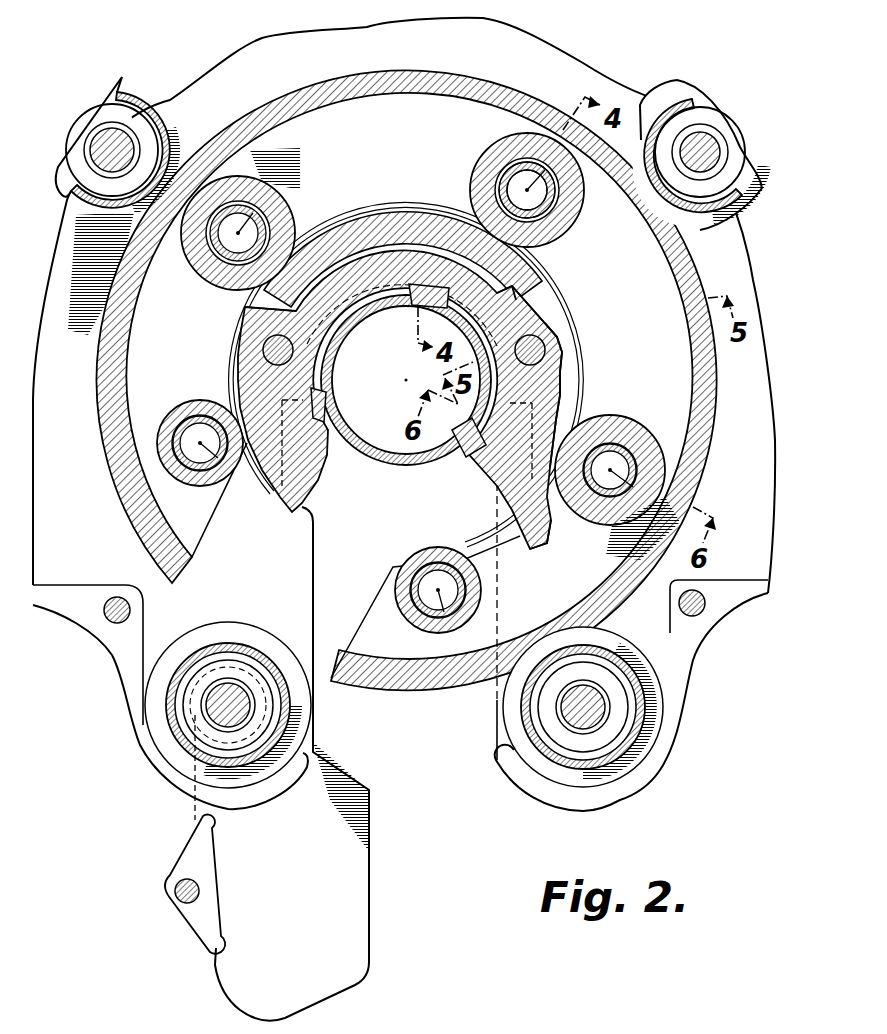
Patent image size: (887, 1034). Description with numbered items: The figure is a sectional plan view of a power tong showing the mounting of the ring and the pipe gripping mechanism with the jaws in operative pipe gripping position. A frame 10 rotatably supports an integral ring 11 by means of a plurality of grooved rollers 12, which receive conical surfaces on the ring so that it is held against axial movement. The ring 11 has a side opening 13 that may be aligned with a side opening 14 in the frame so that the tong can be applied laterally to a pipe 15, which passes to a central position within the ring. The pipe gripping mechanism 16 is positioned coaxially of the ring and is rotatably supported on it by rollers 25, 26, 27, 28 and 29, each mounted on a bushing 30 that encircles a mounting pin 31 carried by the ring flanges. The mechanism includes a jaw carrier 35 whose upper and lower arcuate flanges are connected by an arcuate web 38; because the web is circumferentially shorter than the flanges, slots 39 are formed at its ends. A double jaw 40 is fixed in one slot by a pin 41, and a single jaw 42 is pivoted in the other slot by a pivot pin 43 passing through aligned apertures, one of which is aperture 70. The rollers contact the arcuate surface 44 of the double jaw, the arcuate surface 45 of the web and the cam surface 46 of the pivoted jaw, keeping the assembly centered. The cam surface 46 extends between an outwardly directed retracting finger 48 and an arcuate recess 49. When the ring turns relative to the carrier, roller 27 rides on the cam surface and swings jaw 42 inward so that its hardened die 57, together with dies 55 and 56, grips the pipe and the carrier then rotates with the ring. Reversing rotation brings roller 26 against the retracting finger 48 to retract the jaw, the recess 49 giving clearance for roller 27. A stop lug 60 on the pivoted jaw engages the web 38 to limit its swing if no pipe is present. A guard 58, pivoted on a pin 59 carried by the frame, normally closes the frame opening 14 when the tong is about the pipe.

The frame 10 is at (590, 805).
The ring 11 is at (700, 428).
The rollers 12 is at (173, 114).
The side opening 13 is at (360, 612).
The side opening 14 is at (497, 740).
The pipe 15 is at (406, 467).
The pipe gripping mechanism 16 is at (232, 356).
The roller 25 is at (182, 470).
The roller 26 is at (410, 616).
The roller 27 is at (655, 470).
The roller 28 is at (496, 163).
The roller 29 is at (262, 200).
The bushing 30 is at (548, 212).
The mounting pin 31 is at (545, 228).
The jaw carrier 35 is at (377, 206).
The arcuate web 38 is at (412, 220).
The slots 39 is at (571, 397).
The double jaw 40 is at (328, 470).
The pin 41 is at (272, 344).
The single jaw 42 is at (562, 373).
The pivot pin 43 is at (563, 350).
The arcuate surface 44 is at (275, 494).
The arcuate surface 45 is at (522, 284).
The cam surface 46 is at (585, 414).
The retracting finger 48 is at (549, 544).
The recess 49 is at (568, 382).
The die 55 is at (326, 404).
The die 56 is at (410, 298).
The die 57 is at (462, 440).
The guard 58 is at (353, 865).
The pin 59 is at (236, 690).
The stop lug 60 is at (517, 300).
The aperture 70 is at (545, 343).